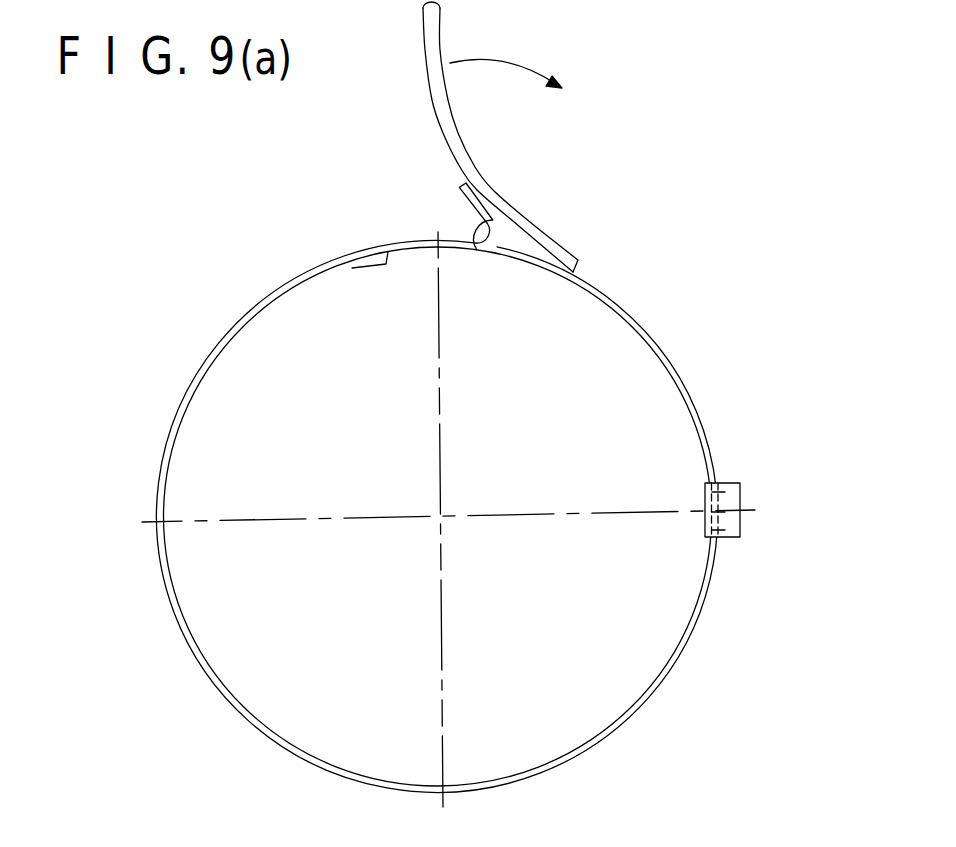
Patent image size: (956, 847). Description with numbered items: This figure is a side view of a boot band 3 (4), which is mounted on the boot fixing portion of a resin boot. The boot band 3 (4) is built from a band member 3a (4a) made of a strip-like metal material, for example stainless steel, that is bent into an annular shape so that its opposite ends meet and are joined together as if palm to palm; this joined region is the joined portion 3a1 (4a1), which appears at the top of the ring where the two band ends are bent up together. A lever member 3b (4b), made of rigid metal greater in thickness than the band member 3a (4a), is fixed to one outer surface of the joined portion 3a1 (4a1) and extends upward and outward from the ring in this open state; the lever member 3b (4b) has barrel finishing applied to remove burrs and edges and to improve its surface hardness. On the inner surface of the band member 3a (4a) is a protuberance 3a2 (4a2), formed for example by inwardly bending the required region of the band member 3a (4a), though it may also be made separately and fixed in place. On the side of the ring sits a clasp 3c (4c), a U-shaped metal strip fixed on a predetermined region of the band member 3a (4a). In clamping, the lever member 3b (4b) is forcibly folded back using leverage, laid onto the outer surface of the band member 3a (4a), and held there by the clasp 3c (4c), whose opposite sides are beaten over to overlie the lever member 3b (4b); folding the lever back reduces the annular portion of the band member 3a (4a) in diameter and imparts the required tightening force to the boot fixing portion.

The boot band 3 is at (498, 403).
The boot band 4 is at (498, 403).
The band member 3a is at (485, 474).
The band member 4a is at (485, 474).
The joined portion 3a1 is at (398, 203).
The joined portion 4a1 is at (467, 206).
The protuberance 3a2 is at (353, 305).
The protuberance 4a2 is at (373, 263).
The lever member 3b is at (500, 136).
The lever member 4b is at (432, 45).
The clasp 3c is at (783, 482).
The clasp 4c is at (738, 483).